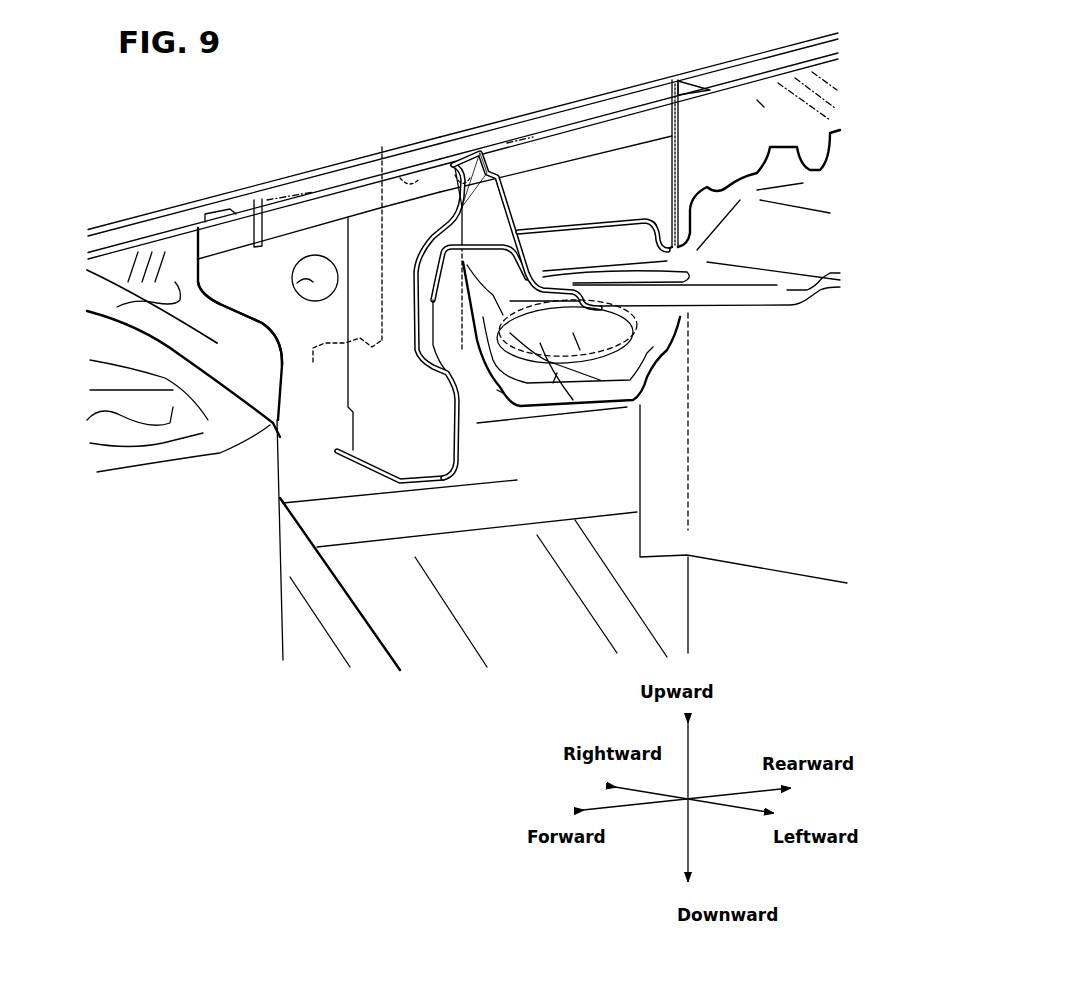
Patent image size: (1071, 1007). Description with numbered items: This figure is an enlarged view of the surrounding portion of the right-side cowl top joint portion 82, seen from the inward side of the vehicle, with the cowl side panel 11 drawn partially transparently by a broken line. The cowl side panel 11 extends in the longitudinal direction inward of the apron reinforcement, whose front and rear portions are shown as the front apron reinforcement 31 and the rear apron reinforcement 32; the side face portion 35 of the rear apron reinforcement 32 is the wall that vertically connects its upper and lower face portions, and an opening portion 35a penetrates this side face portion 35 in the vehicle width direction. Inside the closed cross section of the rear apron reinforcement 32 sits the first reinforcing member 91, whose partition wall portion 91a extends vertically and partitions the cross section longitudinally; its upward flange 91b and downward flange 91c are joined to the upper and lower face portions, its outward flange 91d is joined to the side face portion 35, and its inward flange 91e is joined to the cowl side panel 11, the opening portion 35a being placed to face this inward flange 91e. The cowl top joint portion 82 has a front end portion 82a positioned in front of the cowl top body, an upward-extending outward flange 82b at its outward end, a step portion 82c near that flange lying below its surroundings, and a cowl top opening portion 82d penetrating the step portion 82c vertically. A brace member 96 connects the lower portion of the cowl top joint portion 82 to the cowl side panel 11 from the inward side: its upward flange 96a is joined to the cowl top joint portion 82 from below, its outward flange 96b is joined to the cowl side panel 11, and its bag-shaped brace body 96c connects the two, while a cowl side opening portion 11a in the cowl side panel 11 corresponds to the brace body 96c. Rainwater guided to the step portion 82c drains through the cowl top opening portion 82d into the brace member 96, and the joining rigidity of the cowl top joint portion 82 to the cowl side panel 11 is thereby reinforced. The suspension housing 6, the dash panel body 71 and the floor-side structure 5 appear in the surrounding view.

The roof side rail (front portion) 31 is at (140, 213).
The rear apron reinforcement 32 is at (600, 92).
The side face portion 35 is at (573, 173).
The opening portion 35a is at (262, 312).
The floor panel 5 is at (530, 603).
The suspension housing 6 is at (172, 371).
The dash panel body 71 is at (763, 603).
The cowl side panel 11 is at (147, 303).
The cowl side opening portion 11a is at (643, 410).
The cowl top joint portion 82 is at (765, 245).
The front end portion 82a is at (450, 130).
The outward flange 82b is at (633, 220).
The step portion 82c is at (710, 273).
The cowl top opening portion 82d is at (633, 262).
The first reinforcing member 91 is at (300, 415).
The partition wall portion 91a is at (307, 253).
The upward flange 91b is at (383, 147).
The downward flange 91c is at (373, 443).
The outward flange 91d is at (336, 368).
The inward flange 91e is at (450, 367).
The brace member 96 is at (627, 365).
The upward flange 96a is at (573, 333).
The outward flange 96b is at (497, 390).
The brace body 96c is at (557, 373).